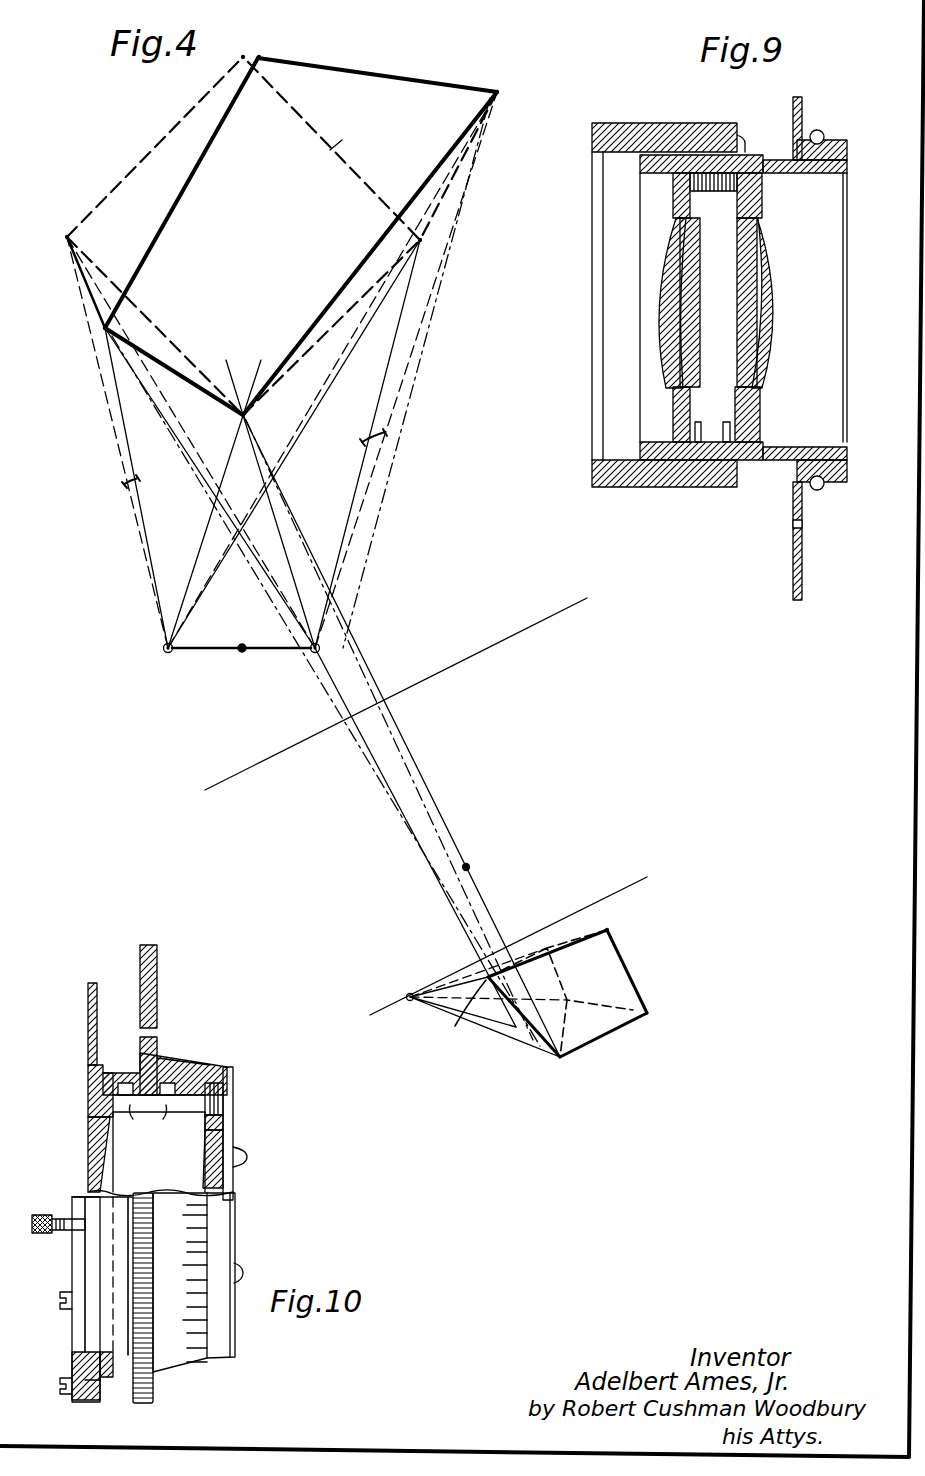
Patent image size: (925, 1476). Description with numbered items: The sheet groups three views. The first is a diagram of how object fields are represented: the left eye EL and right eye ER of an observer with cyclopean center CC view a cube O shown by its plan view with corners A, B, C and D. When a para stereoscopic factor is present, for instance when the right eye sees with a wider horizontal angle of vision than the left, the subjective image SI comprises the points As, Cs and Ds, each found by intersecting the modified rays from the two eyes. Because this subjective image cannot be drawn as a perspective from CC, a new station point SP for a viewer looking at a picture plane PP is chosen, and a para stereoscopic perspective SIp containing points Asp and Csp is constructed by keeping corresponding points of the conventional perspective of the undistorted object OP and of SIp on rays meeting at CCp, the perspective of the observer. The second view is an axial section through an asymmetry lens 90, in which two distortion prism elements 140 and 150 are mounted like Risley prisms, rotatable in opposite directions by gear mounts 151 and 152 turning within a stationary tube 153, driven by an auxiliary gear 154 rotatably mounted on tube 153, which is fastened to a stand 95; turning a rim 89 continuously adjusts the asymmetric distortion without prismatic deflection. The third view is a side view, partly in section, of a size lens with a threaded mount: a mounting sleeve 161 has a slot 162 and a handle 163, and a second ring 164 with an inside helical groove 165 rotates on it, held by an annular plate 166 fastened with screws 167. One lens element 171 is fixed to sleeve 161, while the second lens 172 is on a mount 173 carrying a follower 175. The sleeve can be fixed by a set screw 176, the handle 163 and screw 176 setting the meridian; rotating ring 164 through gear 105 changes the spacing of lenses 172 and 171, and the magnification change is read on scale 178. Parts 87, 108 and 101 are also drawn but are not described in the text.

In FIG. 4, the subjective image SI is at (412, 86).
In FIG. 4, the cube plan view point D is at (226, 55).
In FIG. 4, the subjective image point Ds is at (281, 45).
In FIG. 4, the subjective image point Cs is at (513, 95).
In FIG. 4, the cube O is at (349, 134).
In FIG. 4, the cube plan view point A is at (51, 239).
In FIG. 4, the cube plan view point C is at (430, 233).
In FIG. 4, the subjective image point As is at (77, 331).
In FIG. 4, the cube plan view point B is at (254, 415).
In FIG. 4, the left eye EL is at (282, 385).
In FIG. 4, the right eye ER is at (282, 385).
In FIG. 4, the cyclopean center CC is at (238, 652).
In FIG. 4, the station point SP is at (401, 736).
In FIG. 4, the picture plane PP is at (587, 598).
In FIG. 4, the para stereoscopic perspective SIp is at (640, 985).
In FIG. 4, the conventional perspective of the undistorted object OP is at (605, 1040).
In FIG. 4, the perspective point Csp is at (610, 930).
In FIG. 4, the perspective of observer's cyclopean center CCp is at (458, 1002).
In FIG. 4, the perspective point Asp is at (469, 1017).
In FIG. 9, the stand 95 is at (655, 126).
In FIG. 9, the rim 89 is at (803, 116).
In FIG. 9, the asymmetry lens 90 is at (838, 242).
In FIG. 9, the auxiliary gear 154 is at (716, 200).
In FIG. 9, the distortion prism element 140 is at (672, 306).
In FIG. 9, the distortion prism element 150 is at (766, 304).
In FIG. 9, the gear mount 151 is at (672, 408).
In FIG. 9, the gear mount 152 is at (762, 412).
In FIG. 9, the stationary tube 153 is at (640, 452).
In FIG. 9, the lower pin 87 is at (802, 572).
In FIG. 10, the support column 108 is at (152, 994).
In FIG. 10, the handle 163 is at (88, 1020).
In FIG. 10, the second ring 164 is at (160, 1052).
In FIG. 10, the inside helical groove 165 is at (168, 1074).
In FIG. 10, the follower 175 is at (234, 1082).
In FIG. 10, the annular plate 166 is at (234, 1097).
In FIG. 10, the mount 173 is at (234, 1126).
In FIG. 10, the screws 167 is at (246, 1155).
In FIG. 10, the second lens 172 is at (226, 1178).
In FIG. 10, the lens element 171 is at (96, 1143).
In FIG. 10, the slot 162 is at (159, 1117).
In FIG. 10, the mounting sleeve 161 is at (160, 1154).
In FIG. 10, the set screw 176 is at (44, 1212).
In FIG. 10, the gear 105 is at (156, 1392).
In FIG. 10, the scale 178 is at (200, 1238).
In FIG. 10, the base 101 is at (112, 1378).